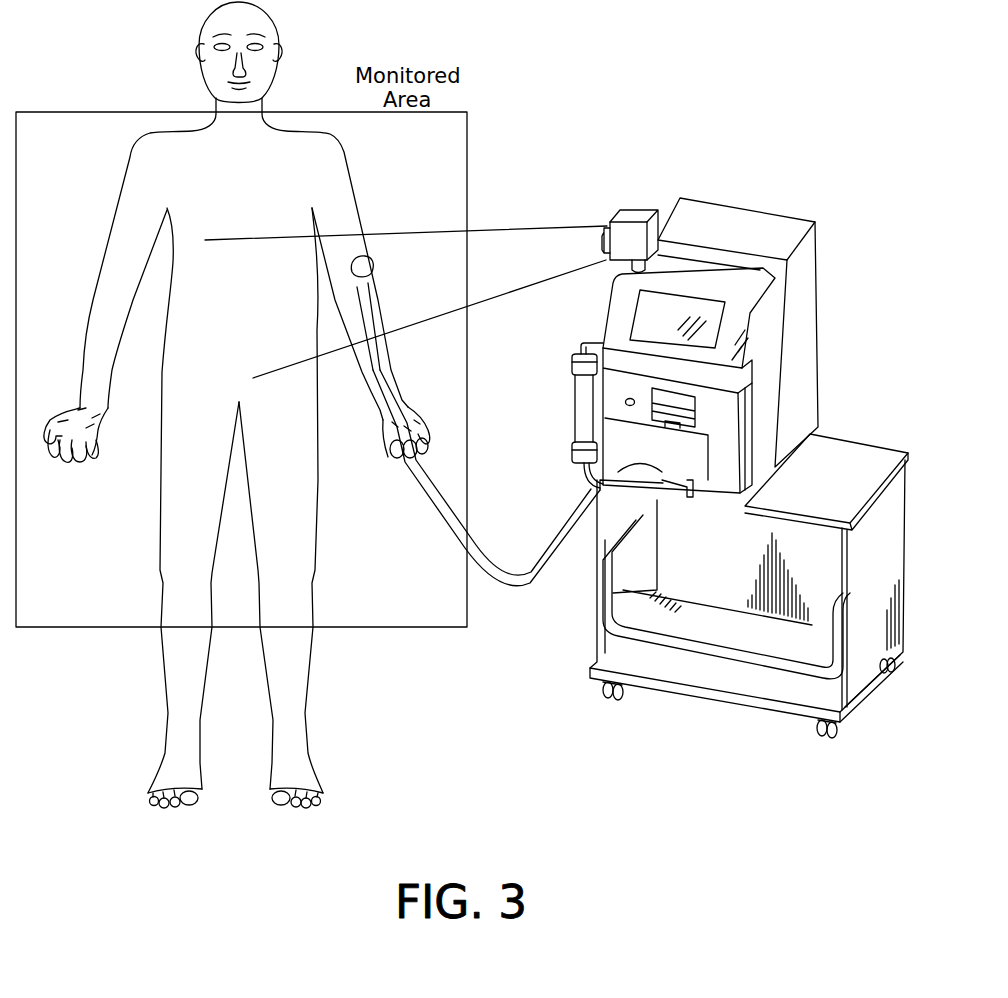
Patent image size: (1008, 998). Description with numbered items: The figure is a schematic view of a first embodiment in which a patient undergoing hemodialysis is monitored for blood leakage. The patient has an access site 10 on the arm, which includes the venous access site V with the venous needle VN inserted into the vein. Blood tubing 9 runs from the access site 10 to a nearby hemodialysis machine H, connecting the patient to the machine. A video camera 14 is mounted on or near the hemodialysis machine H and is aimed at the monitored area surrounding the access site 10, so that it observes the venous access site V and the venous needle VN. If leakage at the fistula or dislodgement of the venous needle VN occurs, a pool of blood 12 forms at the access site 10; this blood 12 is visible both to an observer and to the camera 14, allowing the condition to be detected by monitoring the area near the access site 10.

The access site 10 is at (297, 302).
The pool of blood 12 is at (373, 258).
The video camera 14 is at (631, 213).
The blood tubing 9 is at (527, 594).
The venous access site V is at (377, 291).
The venous needle VN is at (380, 354).
The hemodialysis machine H is at (698, 212).